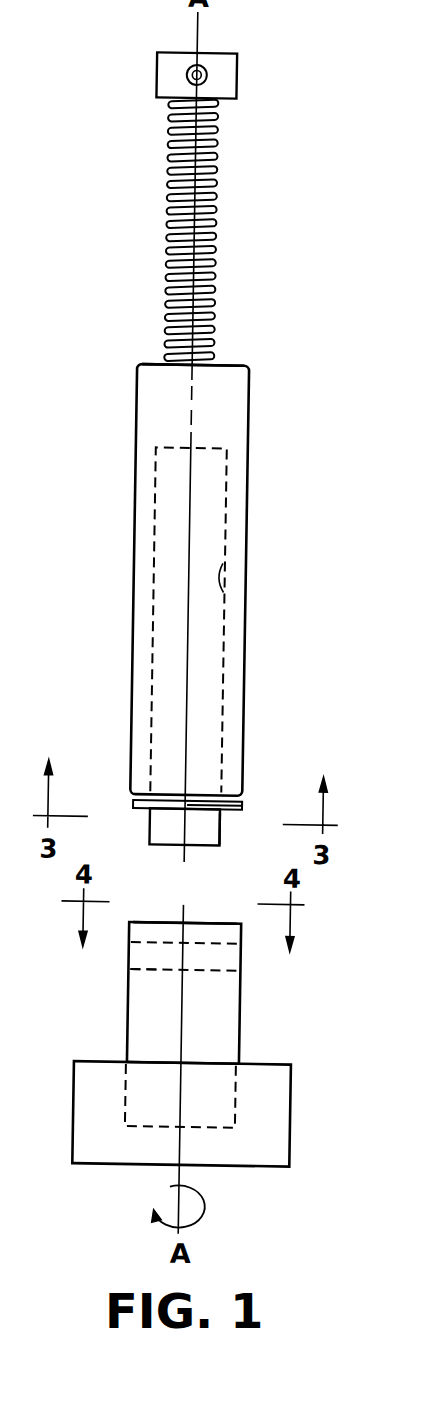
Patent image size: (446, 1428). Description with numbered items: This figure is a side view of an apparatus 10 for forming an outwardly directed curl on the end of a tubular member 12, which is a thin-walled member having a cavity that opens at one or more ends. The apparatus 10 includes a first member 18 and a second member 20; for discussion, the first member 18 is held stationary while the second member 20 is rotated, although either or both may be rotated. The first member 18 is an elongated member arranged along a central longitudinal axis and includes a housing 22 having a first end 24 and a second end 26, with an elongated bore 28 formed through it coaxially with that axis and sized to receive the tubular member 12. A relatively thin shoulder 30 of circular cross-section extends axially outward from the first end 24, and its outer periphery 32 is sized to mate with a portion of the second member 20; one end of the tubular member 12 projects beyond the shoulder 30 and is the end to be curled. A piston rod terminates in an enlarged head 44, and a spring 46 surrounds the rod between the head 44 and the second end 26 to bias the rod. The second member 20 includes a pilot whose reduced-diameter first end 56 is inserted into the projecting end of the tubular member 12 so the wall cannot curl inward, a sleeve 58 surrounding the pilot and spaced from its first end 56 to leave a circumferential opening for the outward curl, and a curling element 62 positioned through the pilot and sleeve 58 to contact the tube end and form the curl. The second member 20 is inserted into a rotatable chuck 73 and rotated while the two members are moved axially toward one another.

The apparatus 10 is at (324, 661).
The tubular member 12 is at (234, 832).
The first member 18 is at (256, 414).
The second member 20 is at (257, 1035).
The housing 22 is at (255, 489).
The first end 24 is at (235, 812).
The second end 26 is at (234, 363).
The elongated bore 28 is at (232, 593).
The shoulder 30 is at (150, 804).
The outer periphery 32 is at (252, 805).
The enlarged head 44 is at (238, 72).
The spring 46 is at (216, 182).
The first end 56 is at (182, 923).
The sleeve 58 is at (256, 985).
The curling element 62 is at (160, 972).
The rotatable chuck 73 is at (308, 1117).